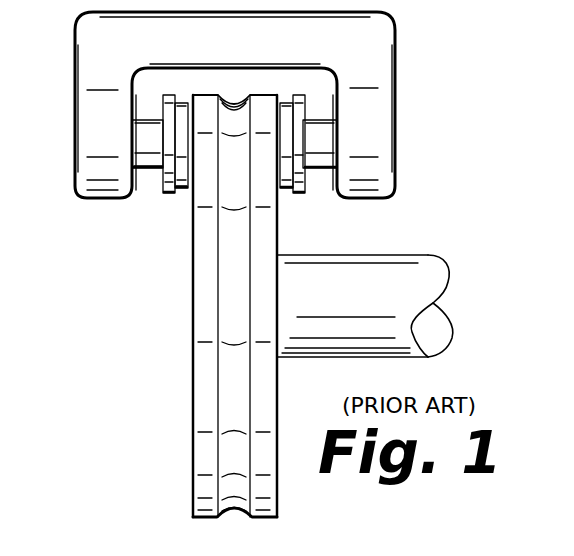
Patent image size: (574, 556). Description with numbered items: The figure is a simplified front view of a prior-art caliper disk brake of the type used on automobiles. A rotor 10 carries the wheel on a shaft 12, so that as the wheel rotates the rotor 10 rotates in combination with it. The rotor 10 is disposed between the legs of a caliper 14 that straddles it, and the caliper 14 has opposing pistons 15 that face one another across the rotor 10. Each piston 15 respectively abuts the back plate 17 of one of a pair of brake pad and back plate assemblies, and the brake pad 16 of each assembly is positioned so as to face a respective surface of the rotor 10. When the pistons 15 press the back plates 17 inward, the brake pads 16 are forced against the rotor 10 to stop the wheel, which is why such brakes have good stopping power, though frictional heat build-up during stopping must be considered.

The rotor 10 is at (193, 312).
The shaft 12 is at (357, 256).
The caliper 14 is at (75, 66).
The pistons 15 is at (145, 140).
The brake pad 16 is at (182, 103).
The back plates 17 is at (164, 190).